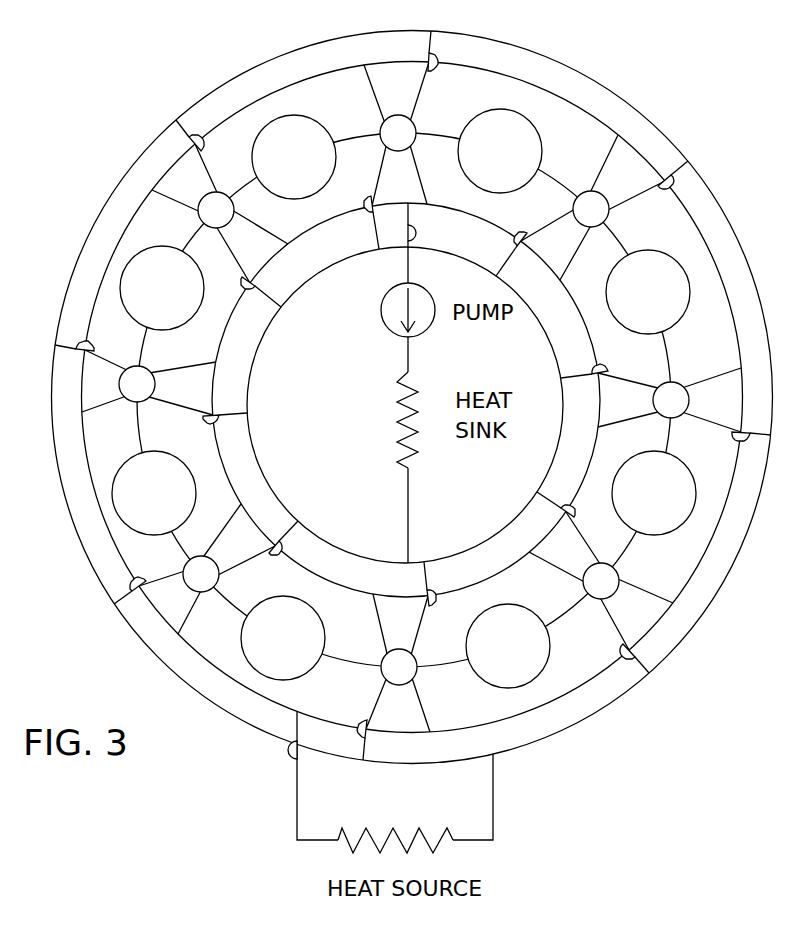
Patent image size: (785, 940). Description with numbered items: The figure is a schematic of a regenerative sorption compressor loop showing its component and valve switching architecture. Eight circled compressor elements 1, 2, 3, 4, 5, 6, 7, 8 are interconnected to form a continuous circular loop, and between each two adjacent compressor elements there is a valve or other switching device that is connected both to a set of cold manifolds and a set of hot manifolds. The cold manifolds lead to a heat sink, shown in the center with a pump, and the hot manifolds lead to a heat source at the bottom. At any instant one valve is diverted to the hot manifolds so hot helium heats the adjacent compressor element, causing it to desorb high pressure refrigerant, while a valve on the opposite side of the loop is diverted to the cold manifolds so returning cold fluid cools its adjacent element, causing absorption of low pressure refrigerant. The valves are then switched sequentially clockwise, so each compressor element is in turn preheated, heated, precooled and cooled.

The compressor element 1 is at (294, 157).
The compressor element 2 is at (500, 151).
The compressor element 3 is at (648, 292).
The compressor element 4 is at (654, 493).
The compressor element 5 is at (508, 646).
The compressor element 6 is at (283, 638).
The compressor element 7 is at (154, 493).
The compressor element 8 is at (162, 288).